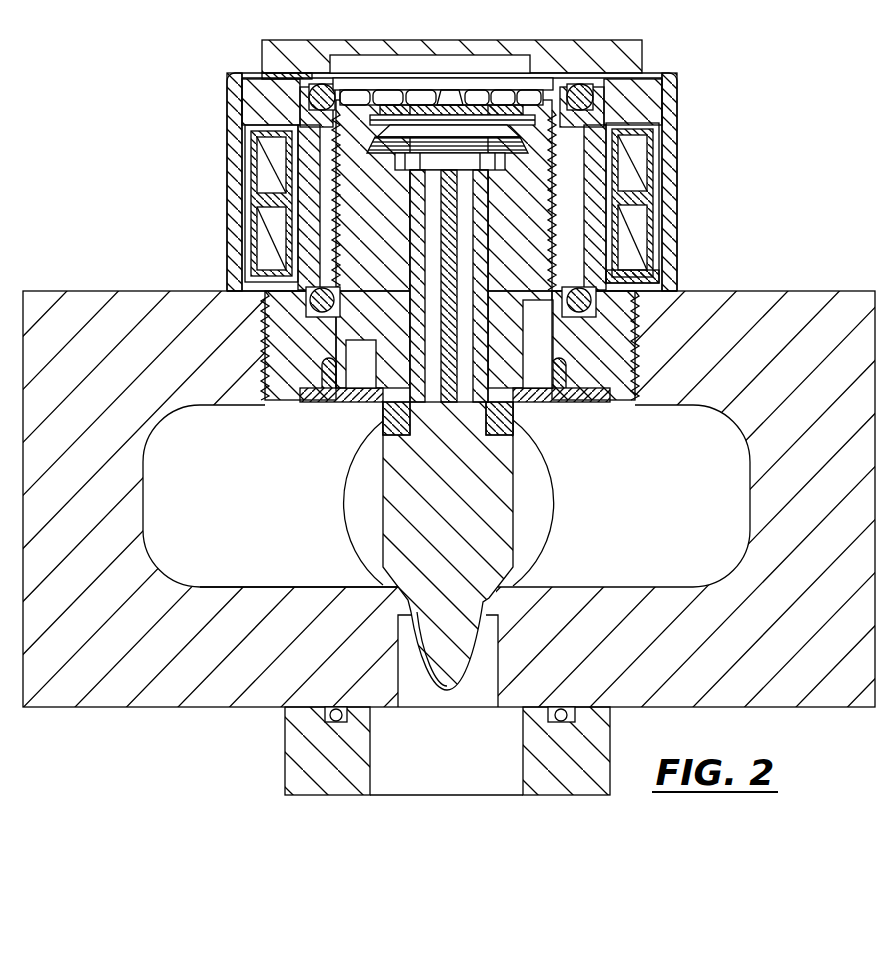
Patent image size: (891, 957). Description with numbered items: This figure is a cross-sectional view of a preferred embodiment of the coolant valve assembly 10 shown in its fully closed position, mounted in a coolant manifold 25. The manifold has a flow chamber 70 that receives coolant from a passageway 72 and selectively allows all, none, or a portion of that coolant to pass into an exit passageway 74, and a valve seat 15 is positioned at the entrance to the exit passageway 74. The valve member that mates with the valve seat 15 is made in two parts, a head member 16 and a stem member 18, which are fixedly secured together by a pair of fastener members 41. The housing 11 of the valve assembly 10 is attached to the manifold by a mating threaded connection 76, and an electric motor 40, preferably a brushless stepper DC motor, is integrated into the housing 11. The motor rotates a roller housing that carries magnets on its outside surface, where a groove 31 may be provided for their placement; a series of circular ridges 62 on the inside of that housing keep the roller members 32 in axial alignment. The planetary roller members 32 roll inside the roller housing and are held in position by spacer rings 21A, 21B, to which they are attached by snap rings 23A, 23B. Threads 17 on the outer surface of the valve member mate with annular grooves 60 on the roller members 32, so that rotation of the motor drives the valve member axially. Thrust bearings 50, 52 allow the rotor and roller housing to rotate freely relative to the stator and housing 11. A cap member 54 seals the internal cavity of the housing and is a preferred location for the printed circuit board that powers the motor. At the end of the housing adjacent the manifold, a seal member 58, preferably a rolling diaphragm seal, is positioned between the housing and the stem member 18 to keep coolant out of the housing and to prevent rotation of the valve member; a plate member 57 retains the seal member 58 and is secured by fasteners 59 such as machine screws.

The coolant valve assembly 10 is at (779, 132).
The housing 11 is at (268, 88).
The valve seat 15 is at (490, 593).
The head member 16 is at (500, 486).
The threads 17 is at (365, 220).
The stem member 18 is at (402, 327).
The spacer ring 21A is at (612, 106).
The spacer ring 21B is at (617, 270).
The snap ring 23A is at (555, 118).
The snap ring 23B is at (592, 305).
The coolant manifold 25 is at (820, 303).
The groove 31 is at (645, 106).
The roller members 32 is at (585, 208).
The electric motor 40 is at (643, 162).
The fastener members 41 is at (480, 205).
The thrust bearing 50 is at (300, 104).
The thrust bearing 52 is at (318, 310).
The cap member 54 is at (328, 48).
The plate member 57 is at (368, 400).
The seal member 58 is at (546, 401).
The fasteners 59 is at (598, 401).
The annular grooves 60 is at (300, 172).
The circular ridges 62 is at (298, 270).
The flow chamber 70 is at (694, 508).
The passageway 72 is at (357, 545).
The exit passageway 74 is at (485, 653).
The threaded connection 76 is at (613, 360).